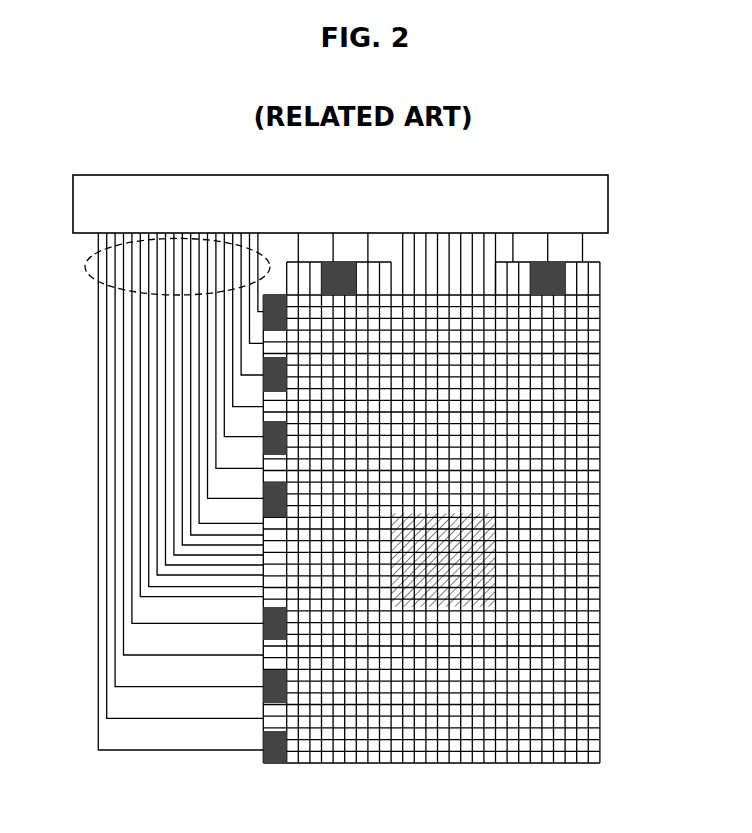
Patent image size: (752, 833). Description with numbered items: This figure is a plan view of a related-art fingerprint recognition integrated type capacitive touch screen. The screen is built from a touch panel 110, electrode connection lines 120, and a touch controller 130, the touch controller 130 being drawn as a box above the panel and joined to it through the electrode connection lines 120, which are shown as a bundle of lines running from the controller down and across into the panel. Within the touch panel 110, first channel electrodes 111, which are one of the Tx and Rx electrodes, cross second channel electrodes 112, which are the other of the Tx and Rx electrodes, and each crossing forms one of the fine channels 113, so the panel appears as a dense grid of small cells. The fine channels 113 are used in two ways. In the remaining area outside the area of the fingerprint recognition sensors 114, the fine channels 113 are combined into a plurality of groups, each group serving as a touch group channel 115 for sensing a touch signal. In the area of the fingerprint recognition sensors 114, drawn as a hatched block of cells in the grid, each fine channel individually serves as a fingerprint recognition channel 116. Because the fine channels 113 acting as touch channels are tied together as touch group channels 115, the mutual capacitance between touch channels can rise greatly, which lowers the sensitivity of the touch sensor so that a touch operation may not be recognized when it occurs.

The touch panel 110 is at (481, 498).
The first channel electrodes 111 is at (599, 377).
The second channel electrodes 112 is at (594, 391).
The fine channels 113 is at (594, 421).
The fingerprint recognition sensors 114 is at (503, 558).
The touch group channel 115 is at (181, 750).
The fingerprint recognition channel 116 is at (140, 571).
The electrode connection lines 120 is at (85, 267).
The touch controller 130 is at (610, 203).